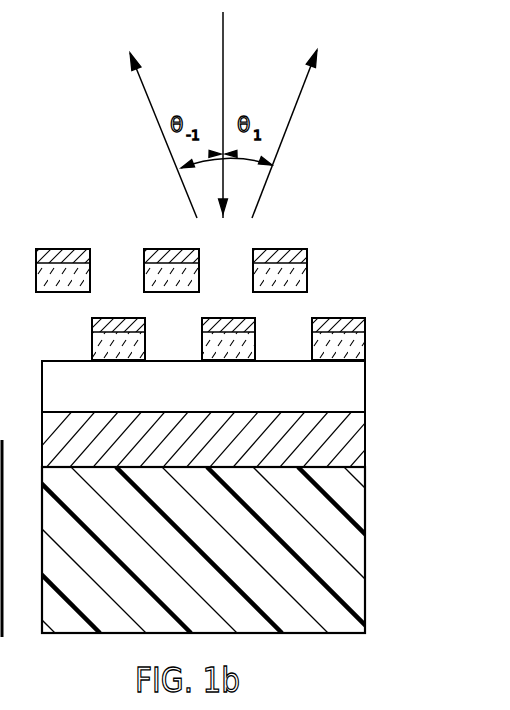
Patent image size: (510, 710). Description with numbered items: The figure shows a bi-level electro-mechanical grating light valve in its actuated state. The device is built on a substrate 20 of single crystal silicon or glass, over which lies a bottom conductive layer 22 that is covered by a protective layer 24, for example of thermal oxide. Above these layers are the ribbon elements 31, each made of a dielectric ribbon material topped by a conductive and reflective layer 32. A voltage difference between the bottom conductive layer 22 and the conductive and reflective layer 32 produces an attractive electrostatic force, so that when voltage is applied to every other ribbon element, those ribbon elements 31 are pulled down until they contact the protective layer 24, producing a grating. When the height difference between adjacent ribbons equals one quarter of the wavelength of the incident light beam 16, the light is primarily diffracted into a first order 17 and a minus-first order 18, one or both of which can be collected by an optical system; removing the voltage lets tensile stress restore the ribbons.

The incident light beam 16 is at (225, 47).
The 1st order 17 is at (293, 117).
The -1st order 18 is at (149, 100).
The substrate 20 is at (360, 513).
The bottom conductive layer 22 is at (360, 433).
The protective layer 24 is at (358, 388).
The ribbon elements 31 is at (305, 273).
The conductive and reflective layer 32 is at (50, 250).